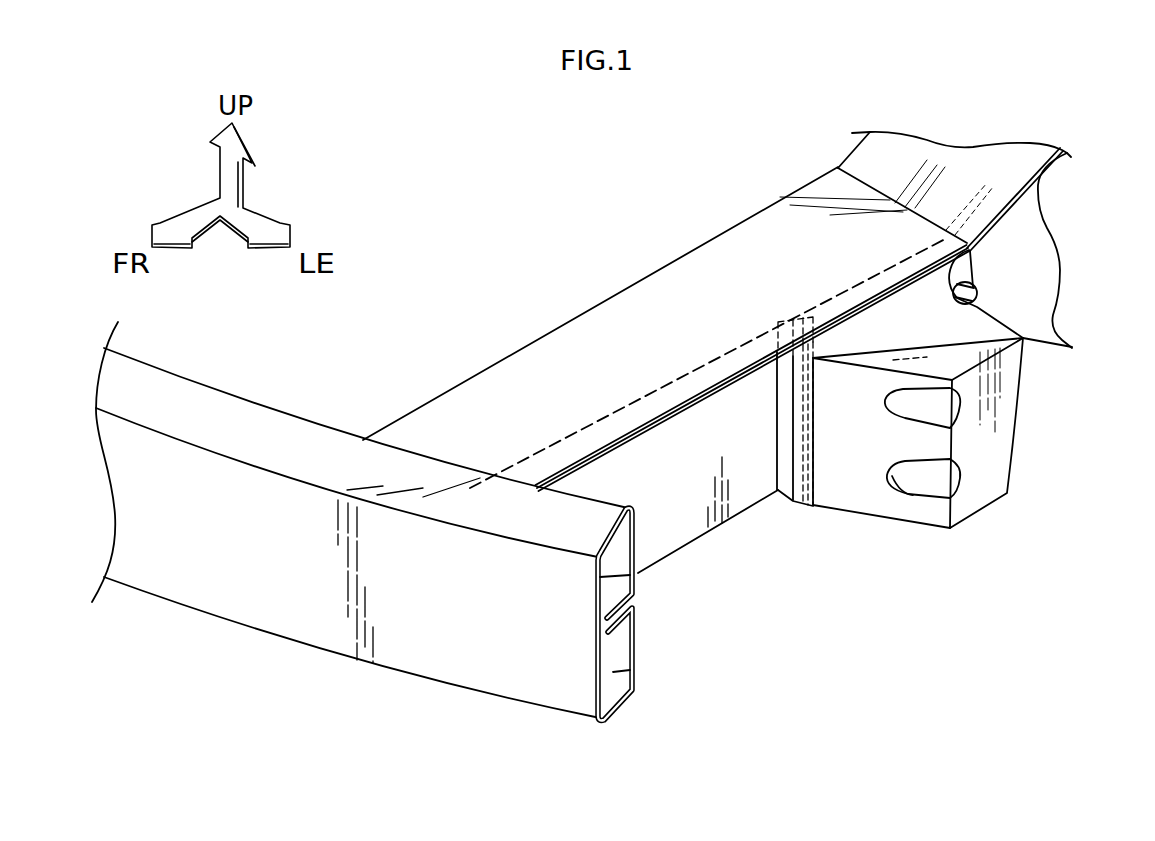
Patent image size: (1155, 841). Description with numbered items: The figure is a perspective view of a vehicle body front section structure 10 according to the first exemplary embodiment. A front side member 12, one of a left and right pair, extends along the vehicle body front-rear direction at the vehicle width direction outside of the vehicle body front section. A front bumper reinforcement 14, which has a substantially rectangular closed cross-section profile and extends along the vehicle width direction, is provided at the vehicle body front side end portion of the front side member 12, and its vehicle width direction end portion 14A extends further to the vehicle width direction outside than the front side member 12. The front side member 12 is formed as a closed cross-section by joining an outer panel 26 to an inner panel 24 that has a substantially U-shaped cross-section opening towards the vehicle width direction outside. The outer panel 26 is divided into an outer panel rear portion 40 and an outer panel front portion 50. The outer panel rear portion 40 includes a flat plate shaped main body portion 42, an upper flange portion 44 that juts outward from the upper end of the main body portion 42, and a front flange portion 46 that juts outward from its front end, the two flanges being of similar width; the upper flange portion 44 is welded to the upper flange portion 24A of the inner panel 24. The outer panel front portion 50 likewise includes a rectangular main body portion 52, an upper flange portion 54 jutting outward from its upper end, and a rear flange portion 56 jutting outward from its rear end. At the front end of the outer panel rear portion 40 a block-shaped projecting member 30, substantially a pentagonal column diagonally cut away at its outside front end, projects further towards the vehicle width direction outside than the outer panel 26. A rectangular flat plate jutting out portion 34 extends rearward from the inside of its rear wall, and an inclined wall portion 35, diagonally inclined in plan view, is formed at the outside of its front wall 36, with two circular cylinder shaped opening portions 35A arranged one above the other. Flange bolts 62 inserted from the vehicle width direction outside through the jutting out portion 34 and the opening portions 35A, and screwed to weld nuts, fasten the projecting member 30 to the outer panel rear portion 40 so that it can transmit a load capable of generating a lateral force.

The vehicle body front section structure 10 is at (857, 633).
The front side member 12 is at (749, 372).
The front bumper reinforcement 14 is at (252, 627).
The vehicle width direction end portion 14A is at (607, 723).
The inner panel 24 is at (483, 388).
The upper flange portion 24A is at (603, 433).
The outer panel 26 is at (886, 372).
The projecting member 30 is at (933, 447).
The jutting out portion 34 is at (967, 273).
The inclined wall portion 35 is at (893, 447).
The opening portion 35A is at (903, 415).
The front wall 36 is at (793, 500).
The outer panel rear portion 40 is at (986, 260).
The main body portion 42 is at (1027, 220).
The upper flange portion 44 is at (877, 303).
The front flange portion 46 is at (820, 353).
The outer panel front portion 50 is at (672, 530).
The main body portion 52 is at (647, 553).
The upper flange portion 54 is at (688, 412).
The rear flange portion 56 is at (777, 493).
The flange bolt 62 is at (978, 303).